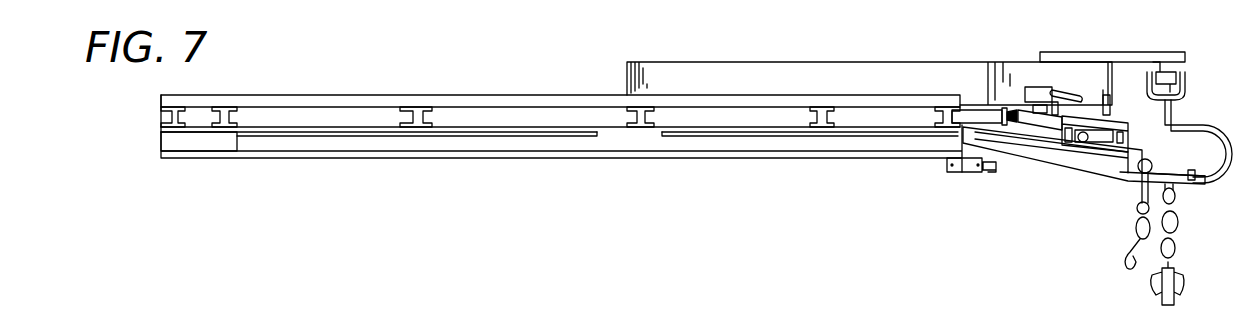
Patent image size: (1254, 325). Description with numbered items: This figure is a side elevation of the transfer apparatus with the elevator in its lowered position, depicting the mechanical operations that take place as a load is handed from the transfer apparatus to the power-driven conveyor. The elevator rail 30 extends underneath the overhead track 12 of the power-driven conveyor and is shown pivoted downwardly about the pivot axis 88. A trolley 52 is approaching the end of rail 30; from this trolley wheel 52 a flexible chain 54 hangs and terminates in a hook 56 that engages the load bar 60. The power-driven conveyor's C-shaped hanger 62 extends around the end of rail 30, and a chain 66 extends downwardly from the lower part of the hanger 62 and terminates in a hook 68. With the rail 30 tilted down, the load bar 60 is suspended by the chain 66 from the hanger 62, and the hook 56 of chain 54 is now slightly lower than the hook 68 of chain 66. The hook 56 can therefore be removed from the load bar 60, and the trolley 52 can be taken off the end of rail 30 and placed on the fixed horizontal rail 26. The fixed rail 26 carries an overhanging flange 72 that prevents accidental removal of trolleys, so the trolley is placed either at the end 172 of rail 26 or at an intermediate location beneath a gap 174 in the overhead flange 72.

The overhead track 12 is at (1199, 83).
The fixed horizontal rail 26 is at (743, 158).
The elevator rail 30 is at (1048, 169).
The trolley wheel 52 is at (1115, 172).
The flexible chain 54 is at (1133, 232).
The hook 56 is at (1123, 263).
The load bar 60 is at (1168, 309).
The C-shaped hanger 62 is at (1207, 134).
The chain 66 is at (1182, 223).
The hook 68 is at (1174, 256).
The overhanging flange 72 is at (458, 133).
The pivot axis 88 is at (960, 168).
The end 172 is at (186, 149).
The gap 174 is at (622, 133).